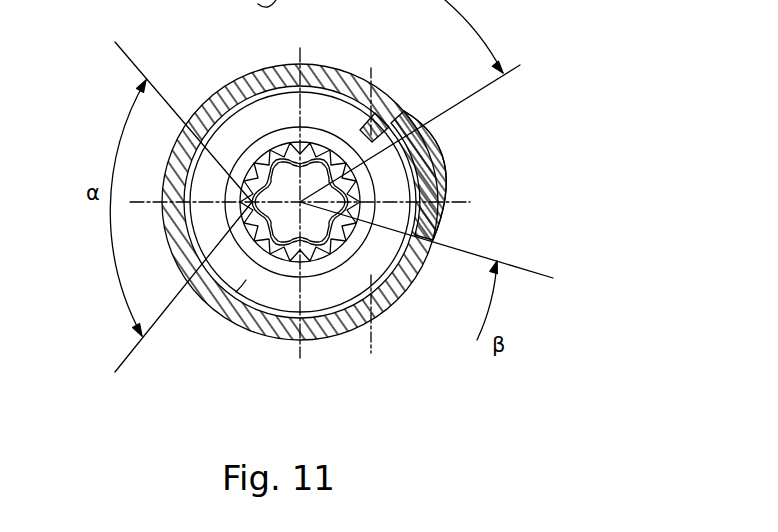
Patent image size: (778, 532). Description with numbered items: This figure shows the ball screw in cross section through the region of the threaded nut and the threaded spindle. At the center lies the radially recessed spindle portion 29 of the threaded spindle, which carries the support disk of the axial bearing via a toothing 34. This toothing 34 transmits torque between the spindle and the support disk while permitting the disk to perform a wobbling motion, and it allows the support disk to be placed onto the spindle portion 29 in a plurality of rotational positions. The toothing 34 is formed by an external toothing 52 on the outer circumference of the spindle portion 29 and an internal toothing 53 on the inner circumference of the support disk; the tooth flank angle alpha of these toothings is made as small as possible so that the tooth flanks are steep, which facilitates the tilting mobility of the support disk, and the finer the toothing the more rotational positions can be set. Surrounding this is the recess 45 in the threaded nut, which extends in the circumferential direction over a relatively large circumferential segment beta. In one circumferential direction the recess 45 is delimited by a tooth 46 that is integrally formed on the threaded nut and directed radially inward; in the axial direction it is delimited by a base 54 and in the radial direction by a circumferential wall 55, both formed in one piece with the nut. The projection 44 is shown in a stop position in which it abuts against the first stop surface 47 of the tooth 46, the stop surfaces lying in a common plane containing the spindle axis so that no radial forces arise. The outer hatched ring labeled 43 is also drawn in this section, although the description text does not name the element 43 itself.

The spindle portion 29 is at (238, 78).
The toothing 34 is at (240, 243).
The outer ring 43 is at (433, 185).
The projection 44 is at (398, 130).
The recess 45 is at (333, 112).
The tooth 46 is at (410, 166).
The first stop surface 47 is at (428, 132).
The external toothing 52 is at (319, 268).
The internal toothing 53 is at (265, 268).
The base 54 is at (240, 290).
The circumferential wall 55 is at (283, 192).